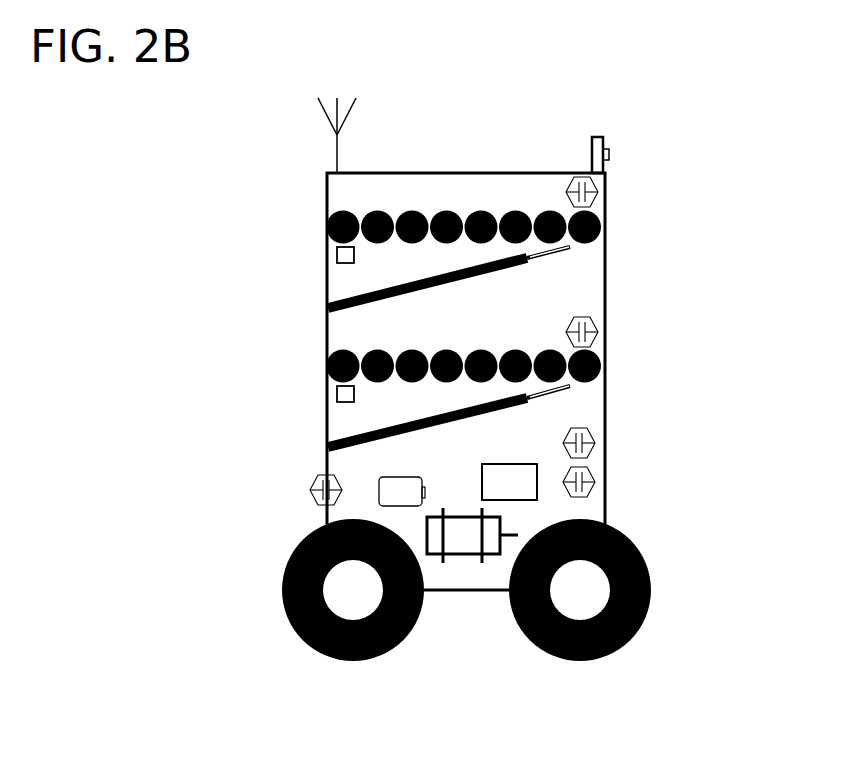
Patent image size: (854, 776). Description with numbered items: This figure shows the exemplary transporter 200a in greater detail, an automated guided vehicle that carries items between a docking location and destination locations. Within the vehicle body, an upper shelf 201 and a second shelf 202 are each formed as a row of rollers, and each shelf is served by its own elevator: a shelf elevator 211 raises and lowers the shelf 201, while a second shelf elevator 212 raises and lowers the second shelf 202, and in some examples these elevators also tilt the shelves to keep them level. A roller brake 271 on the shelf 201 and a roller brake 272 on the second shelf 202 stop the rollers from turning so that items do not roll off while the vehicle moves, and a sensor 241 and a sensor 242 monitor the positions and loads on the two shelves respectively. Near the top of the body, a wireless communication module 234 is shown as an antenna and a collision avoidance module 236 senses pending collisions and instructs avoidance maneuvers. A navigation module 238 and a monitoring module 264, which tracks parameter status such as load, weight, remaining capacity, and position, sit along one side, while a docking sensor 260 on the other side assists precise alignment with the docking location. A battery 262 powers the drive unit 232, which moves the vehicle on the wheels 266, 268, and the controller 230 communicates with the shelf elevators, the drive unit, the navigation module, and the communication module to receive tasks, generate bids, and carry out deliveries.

The transporter 200a is at (488, 58).
The wireless communication module 234 is at (339, 150).
The collision avoidance module 236 is at (590, 141).
The sensor 241 is at (591, 190).
The shelf 201 is at (606, 226).
The roller brake 271 is at (343, 256).
The shelf elevator 211 is at (472, 269).
The sensor 242 is at (591, 329).
The second shelf 202 is at (606, 366).
The roller brake 272 is at (343, 396).
The second shelf elevator 212 is at (474, 402).
The navigation module 238 is at (590, 436).
The monitoring module 264 is at (590, 476).
The docking sensor 260 is at (313, 486).
The battery 262 is at (402, 491).
The controller 230 is at (509, 482).
The drive unit 232 is at (465, 515).
The left wheel 266 is at (292, 572).
The right wheel 268 is at (640, 553).